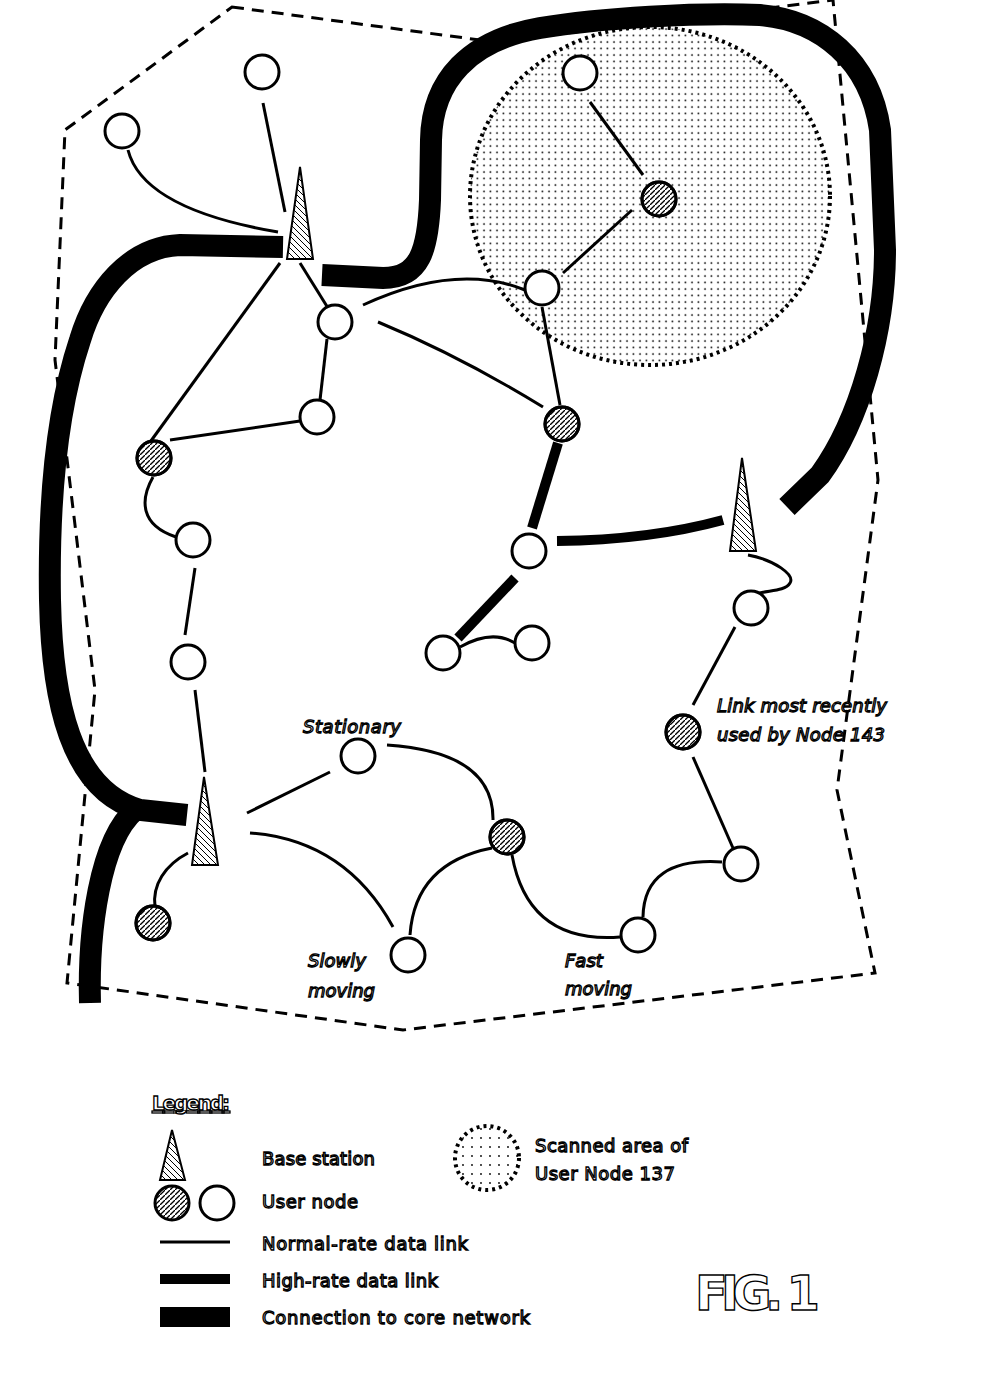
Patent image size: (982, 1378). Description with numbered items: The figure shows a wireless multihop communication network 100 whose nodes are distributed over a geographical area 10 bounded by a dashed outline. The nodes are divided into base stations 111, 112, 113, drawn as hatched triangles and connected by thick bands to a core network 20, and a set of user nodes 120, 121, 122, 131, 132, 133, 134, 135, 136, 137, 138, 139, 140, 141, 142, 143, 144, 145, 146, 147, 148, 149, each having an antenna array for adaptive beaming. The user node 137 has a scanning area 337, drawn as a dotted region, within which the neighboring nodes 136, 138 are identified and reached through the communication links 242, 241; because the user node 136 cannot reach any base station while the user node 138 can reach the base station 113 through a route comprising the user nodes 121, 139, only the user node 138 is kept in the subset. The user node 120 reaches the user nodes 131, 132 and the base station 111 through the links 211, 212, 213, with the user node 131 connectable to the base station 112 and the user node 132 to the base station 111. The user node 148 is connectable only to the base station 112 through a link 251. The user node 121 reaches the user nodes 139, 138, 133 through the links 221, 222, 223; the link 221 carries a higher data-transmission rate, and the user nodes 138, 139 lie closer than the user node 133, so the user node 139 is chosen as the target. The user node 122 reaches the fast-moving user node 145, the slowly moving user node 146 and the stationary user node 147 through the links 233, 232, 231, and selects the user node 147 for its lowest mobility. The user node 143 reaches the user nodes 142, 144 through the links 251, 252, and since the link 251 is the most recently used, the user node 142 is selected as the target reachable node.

The geographical area 10 is at (466, 532).
The core network 20 is at (131, 938).
The wireless multihop communication network 100 is at (704, 1025).
The base station 111 is at (314, 222).
The base station 112 is at (218, 826).
The base station 113 is at (756, 510).
The user node 120 is at (169, 454).
The user node 121 is at (577, 420).
The user node 122 is at (522, 833).
The user node 131 is at (208, 536).
The user node 132 is at (332, 413).
The user node 133 is at (350, 318).
The user node 134 is at (137, 127).
The user node 135 is at (277, 68).
The user node 136 is at (595, 69).
The user node 137 is at (674, 195).
The user node 138 is at (557, 284).
The user node 139 is at (544, 547).
The user node 140 is at (458, 649).
The user node 141 is at (547, 639).
The user node 142 is at (766, 604).
The user node 143 is at (698, 728).
The user node 144 is at (756, 860).
The user node 145 is at (653, 931).
The user node 146 is at (423, 951).
The user node 147 is at (373, 752).
The user node 148 is at (168, 919).
The user node 149 is at (203, 658).
The communication link 211 is at (149, 536).
The communication link 212 is at (235, 401).
The communication link 213 is at (200, 354).
The communication link 221 is at (510, 485).
The communication link 222 is at (598, 357).
The communication link 223 is at (460, 375).
The communication link 231 is at (476, 782).
The communication link 232 is at (451, 895).
The communication link 233 is at (566, 896).
The communication link 241 is at (613, 254).
The communication link 242 is at (592, 144).
The communication link 251 is at (482, 733).
The communication link 252 is at (678, 802).
The scanning area 337 is at (650, 198).